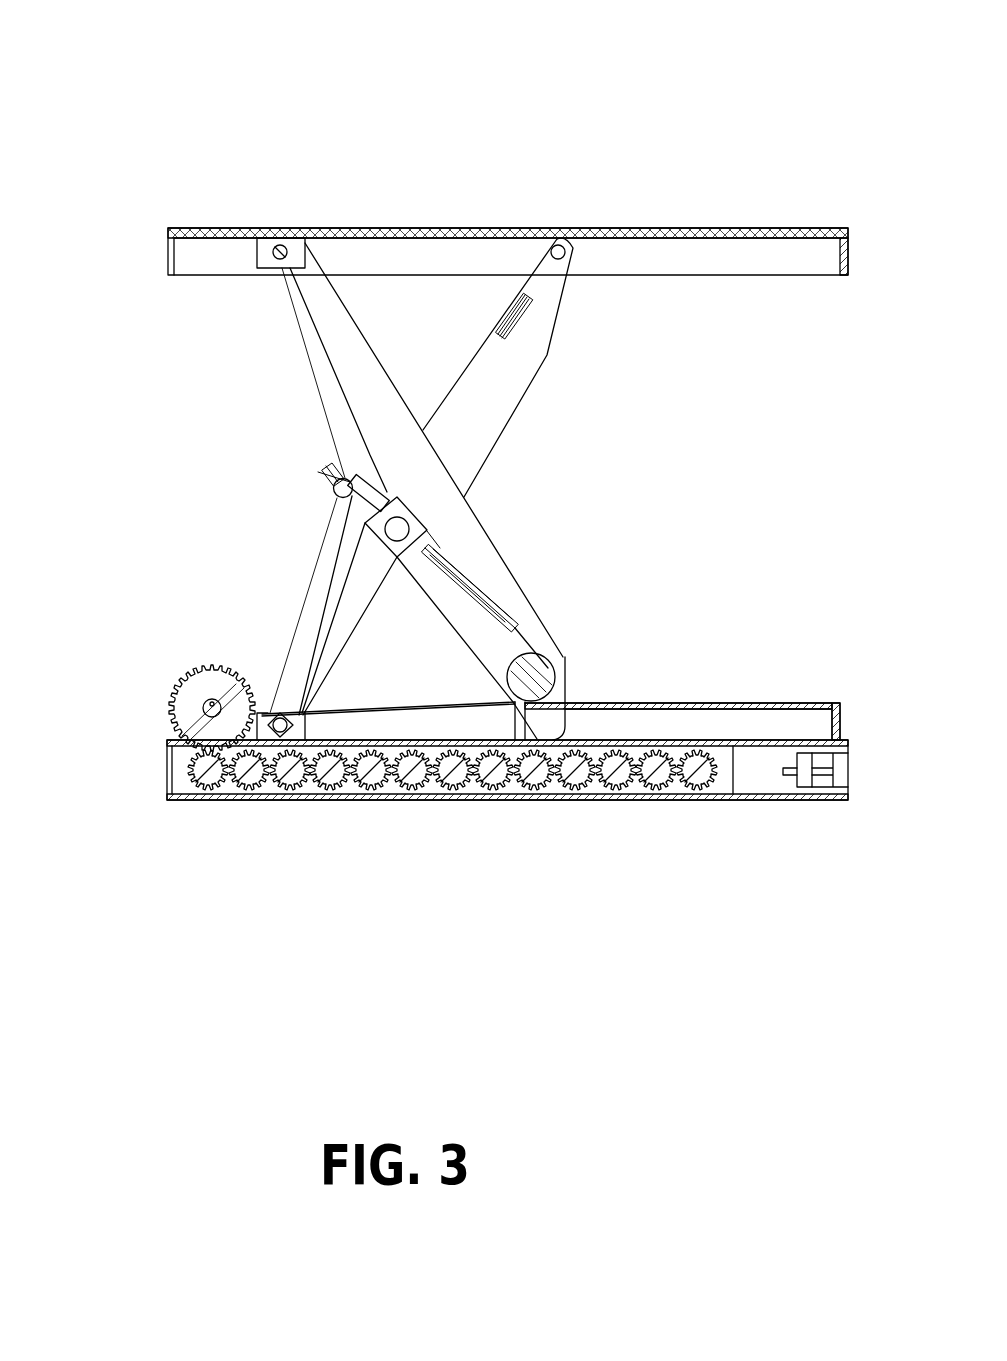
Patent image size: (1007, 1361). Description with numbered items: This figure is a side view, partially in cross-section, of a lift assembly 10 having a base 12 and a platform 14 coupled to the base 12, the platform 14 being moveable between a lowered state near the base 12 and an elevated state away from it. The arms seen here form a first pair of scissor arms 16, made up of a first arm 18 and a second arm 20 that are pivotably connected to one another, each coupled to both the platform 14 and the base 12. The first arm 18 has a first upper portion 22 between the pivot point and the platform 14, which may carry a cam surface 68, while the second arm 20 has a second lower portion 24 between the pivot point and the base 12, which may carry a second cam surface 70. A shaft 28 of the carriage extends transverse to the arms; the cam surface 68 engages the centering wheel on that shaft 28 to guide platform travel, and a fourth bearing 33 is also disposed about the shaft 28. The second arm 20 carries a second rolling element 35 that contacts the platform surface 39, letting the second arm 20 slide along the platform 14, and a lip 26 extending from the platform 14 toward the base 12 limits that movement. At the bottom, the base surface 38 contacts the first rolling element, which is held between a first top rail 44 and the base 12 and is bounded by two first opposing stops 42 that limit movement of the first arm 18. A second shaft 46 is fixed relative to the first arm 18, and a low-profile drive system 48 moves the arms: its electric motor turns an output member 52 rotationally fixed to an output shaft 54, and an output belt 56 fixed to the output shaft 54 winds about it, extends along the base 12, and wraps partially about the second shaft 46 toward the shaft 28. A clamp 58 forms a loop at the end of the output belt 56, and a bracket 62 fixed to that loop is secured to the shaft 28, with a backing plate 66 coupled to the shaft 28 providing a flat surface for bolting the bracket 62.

The lift assembly 10 is at (148, 97).
The base 12 is at (378, 778).
The platform 14 is at (635, 228).
The first pair of scissor arms 16 is at (560, 452).
The first arm 18 is at (353, 358).
The second arm 20 is at (345, 617).
The first upper portion 22 is at (254, 373).
The second lower portion 24 is at (246, 605).
The lip 26 is at (845, 258).
The shaft 28 is at (332, 492).
The fourth bearing 33 is at (336, 496).
The second rolling element 35 is at (557, 244).
The base surface 38 is at (752, 736).
The platform surface 39 is at (792, 240).
The first opposing stops 42 is at (838, 704).
The first top rail 44 is at (690, 703).
The second shaft 46 is at (538, 680).
The drive system 48 is at (272, 848).
The output member 52 is at (192, 695).
The output shaft 54 is at (212, 708).
The output belt 56 is at (420, 712).
The clamp 58 is at (440, 588).
The bracket 62 is at (405, 513).
The backing plate 66 is at (330, 476).
The cam surface 68 is at (310, 393).
The second cam surface 70 is at (310, 560).